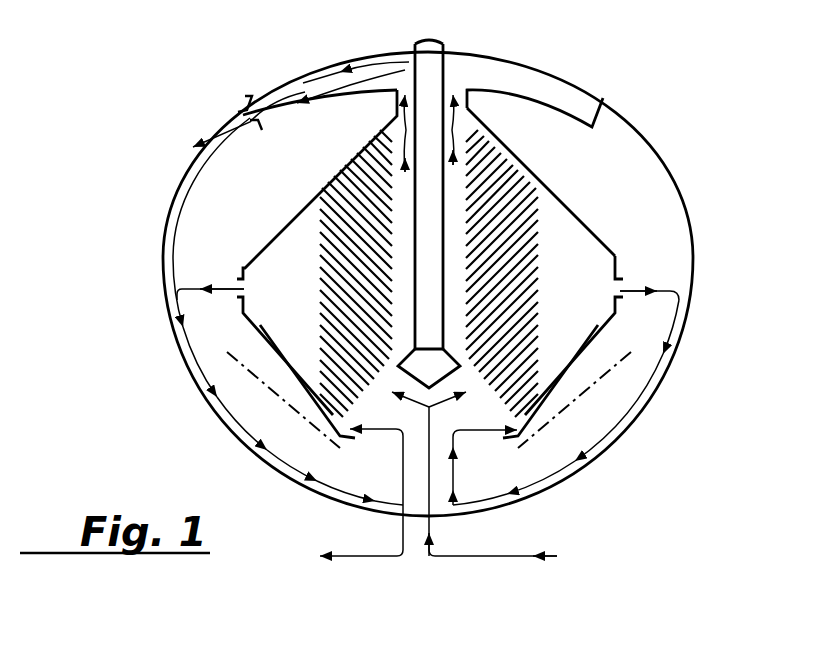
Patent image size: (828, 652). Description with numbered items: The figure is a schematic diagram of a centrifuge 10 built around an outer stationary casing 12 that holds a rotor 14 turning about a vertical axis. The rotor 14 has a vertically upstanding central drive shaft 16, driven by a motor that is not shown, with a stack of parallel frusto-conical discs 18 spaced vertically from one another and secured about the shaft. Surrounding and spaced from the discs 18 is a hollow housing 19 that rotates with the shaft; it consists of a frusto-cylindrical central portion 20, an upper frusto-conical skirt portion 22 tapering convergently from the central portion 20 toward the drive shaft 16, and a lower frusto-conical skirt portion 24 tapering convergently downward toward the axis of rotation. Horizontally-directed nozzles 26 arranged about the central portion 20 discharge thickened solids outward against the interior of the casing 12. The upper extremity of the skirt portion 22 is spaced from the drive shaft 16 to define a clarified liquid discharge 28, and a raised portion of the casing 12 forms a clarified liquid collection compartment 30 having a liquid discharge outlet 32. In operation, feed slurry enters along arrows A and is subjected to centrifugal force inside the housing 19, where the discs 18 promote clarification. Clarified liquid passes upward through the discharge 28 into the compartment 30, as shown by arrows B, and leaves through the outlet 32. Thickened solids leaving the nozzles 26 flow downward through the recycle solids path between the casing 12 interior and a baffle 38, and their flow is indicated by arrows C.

The centrifuge 10 is at (647, 146).
The outer stationary casing 12 is at (693, 262).
The rotor 14 is at (283, 210).
The central drive shaft 16 is at (423, 42).
The frusto-conical discs 18 is at (323, 303).
The hollow housing 19 is at (604, 237).
The frusto-cylindrical central portion 20 is at (612, 268).
The upper frusto-conical skirt portion 22 is at (561, 202).
The lower frusto-conical skirt portion 24 is at (598, 345).
The nozzles 26 is at (620, 280).
The clarified liquid discharge 28 is at (452, 83).
The clarified liquid collection compartment 30 is at (522, 82).
The liquid discharge outlet 32 is at (240, 117).
The baffle 38 is at (545, 427).
The feed slurry flow arrows A is at (483, 557).
The clarified liquid flow arrows B is at (303, 83).
The thickened solids flow arrows C is at (380, 432).